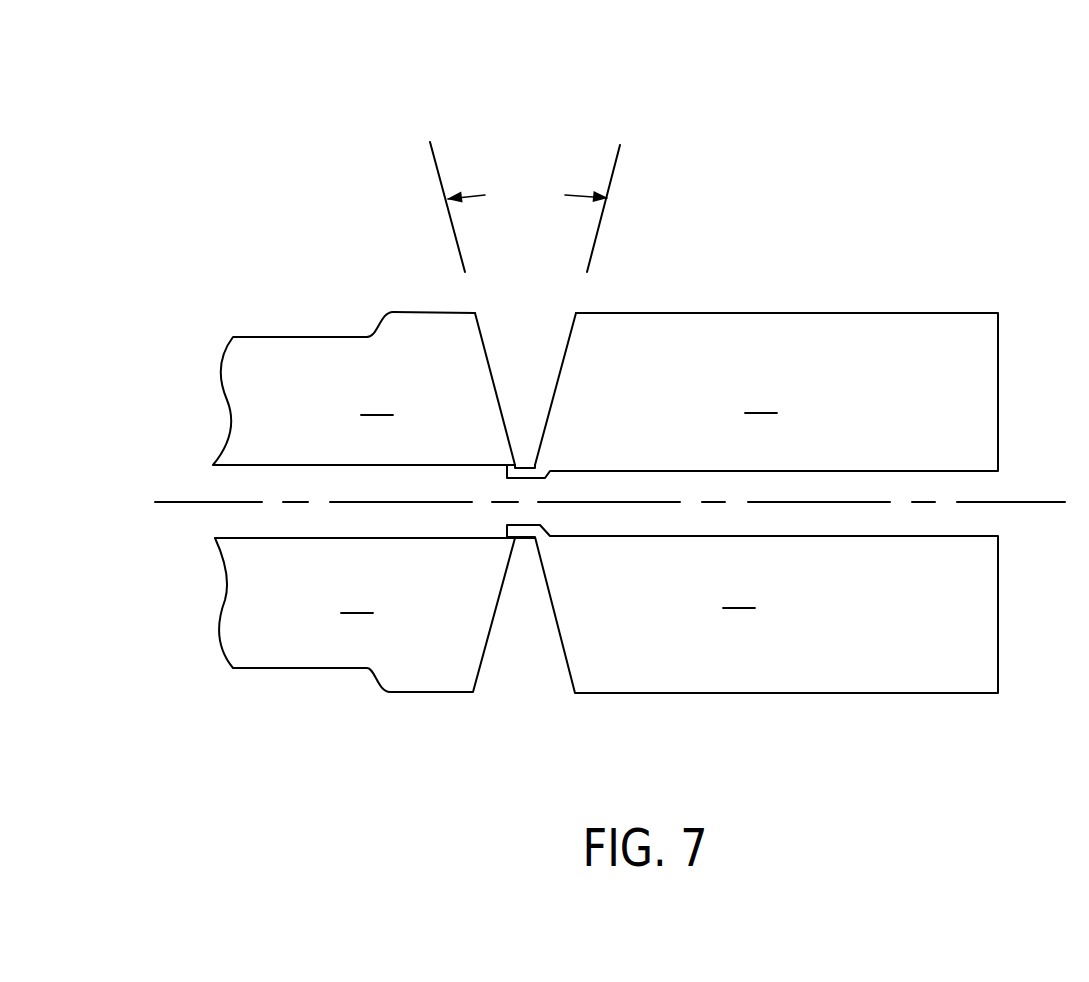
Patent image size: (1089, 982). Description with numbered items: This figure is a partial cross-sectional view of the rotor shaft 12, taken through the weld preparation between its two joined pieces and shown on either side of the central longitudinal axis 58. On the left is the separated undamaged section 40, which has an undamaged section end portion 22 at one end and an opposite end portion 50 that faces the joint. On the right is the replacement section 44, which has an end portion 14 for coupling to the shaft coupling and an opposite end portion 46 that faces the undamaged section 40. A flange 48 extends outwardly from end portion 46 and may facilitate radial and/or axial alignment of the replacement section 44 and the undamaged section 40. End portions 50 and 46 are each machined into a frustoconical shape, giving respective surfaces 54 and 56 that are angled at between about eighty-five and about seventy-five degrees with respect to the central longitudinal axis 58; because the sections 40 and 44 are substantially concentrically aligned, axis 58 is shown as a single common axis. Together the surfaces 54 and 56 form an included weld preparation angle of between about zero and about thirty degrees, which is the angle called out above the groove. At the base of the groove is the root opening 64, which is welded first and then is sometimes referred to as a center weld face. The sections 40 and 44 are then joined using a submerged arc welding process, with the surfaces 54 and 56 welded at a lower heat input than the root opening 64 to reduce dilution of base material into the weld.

The rotor shaft 12 is at (665, 125).
The end portion 14 is at (752, 473).
The undamaged section end portion 22 is at (370, 476).
The undamaged section 40 is at (370, 476).
The replacement section 44 is at (752, 473).
The end portion 46 is at (596, 359).
The flange 48 is at (525, 539).
The end portion 50 is at (455, 366).
The surface 54 is at (492, 357).
The surface 56 is at (570, 330).
The central longitudinal axis 58 is at (1037, 503).
The root opening 64 is at (526, 448).